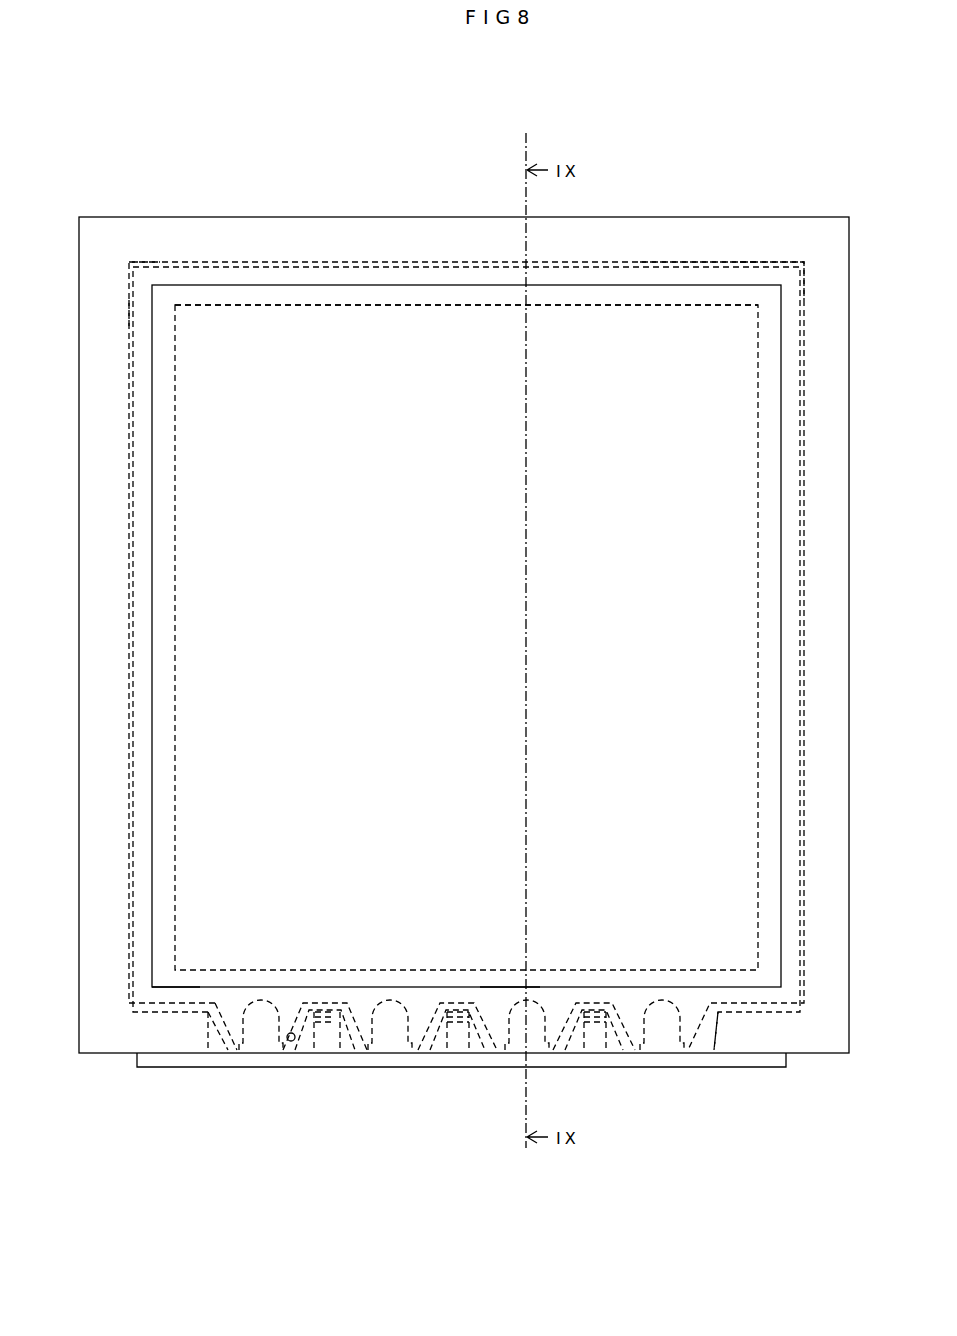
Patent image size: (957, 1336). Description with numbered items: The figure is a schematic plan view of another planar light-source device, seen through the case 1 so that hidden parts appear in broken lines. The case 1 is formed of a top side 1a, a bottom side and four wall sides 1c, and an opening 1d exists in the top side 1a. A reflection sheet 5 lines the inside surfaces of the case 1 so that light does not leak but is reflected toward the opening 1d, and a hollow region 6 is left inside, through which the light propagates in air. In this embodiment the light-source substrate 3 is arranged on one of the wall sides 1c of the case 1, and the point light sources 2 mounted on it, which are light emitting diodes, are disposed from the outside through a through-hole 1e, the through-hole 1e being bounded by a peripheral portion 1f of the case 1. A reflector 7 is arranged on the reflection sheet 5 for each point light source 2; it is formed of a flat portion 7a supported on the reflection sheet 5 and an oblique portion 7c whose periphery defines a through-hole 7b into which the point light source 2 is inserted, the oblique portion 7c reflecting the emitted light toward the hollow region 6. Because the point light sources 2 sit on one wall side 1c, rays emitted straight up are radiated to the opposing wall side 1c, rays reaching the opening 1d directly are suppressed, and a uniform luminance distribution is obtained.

The case 1 is at (128, 1032).
The top side 1a is at (685, 300).
The wall sides 1c is at (128, 315).
The opening 1d is at (313, 308).
The through-hole 1e is at (350, 1020).
The peripheral portion 1f is at (615, 1040).
The point light sources 2 is at (260, 1040).
The light-source substrate 3 is at (680, 1060).
The reflection sheet 5 is at (193, 270).
The hollow region 6 is at (272, 285).
The reflector 7 is at (797, 1005).
The flat portion 7a is at (177, 1003).
The through-hole 7b is at (492, 1012).
The oblique portion 7c is at (237, 1025).